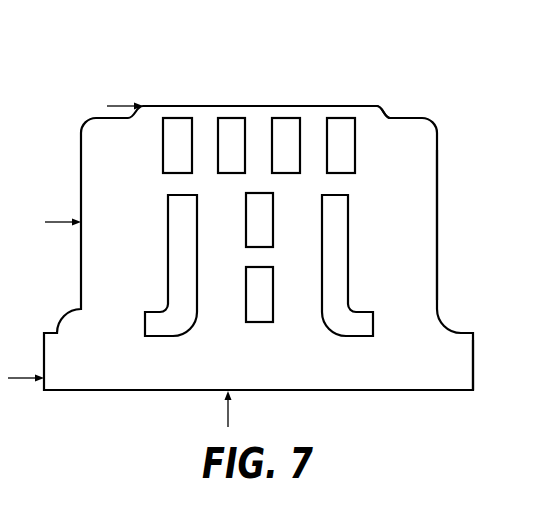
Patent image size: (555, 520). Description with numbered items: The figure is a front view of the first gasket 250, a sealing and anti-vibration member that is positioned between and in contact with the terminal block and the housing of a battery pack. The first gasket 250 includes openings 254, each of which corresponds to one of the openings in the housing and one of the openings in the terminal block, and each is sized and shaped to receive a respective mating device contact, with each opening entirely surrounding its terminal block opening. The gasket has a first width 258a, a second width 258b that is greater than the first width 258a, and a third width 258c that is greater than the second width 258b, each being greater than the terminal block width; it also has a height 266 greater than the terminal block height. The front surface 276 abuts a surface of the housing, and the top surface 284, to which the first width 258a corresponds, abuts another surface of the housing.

The first gasket 250 is at (152, 78).
The openings 254 is at (230, 148).
The height 266 is at (228, 97).
The top surface 284 is at (265, 106).
The first width 258a is at (387, 107).
The second width 258b is at (446, 222).
The third width 258c is at (483, 379).
The front surface 276 is at (325, 367).